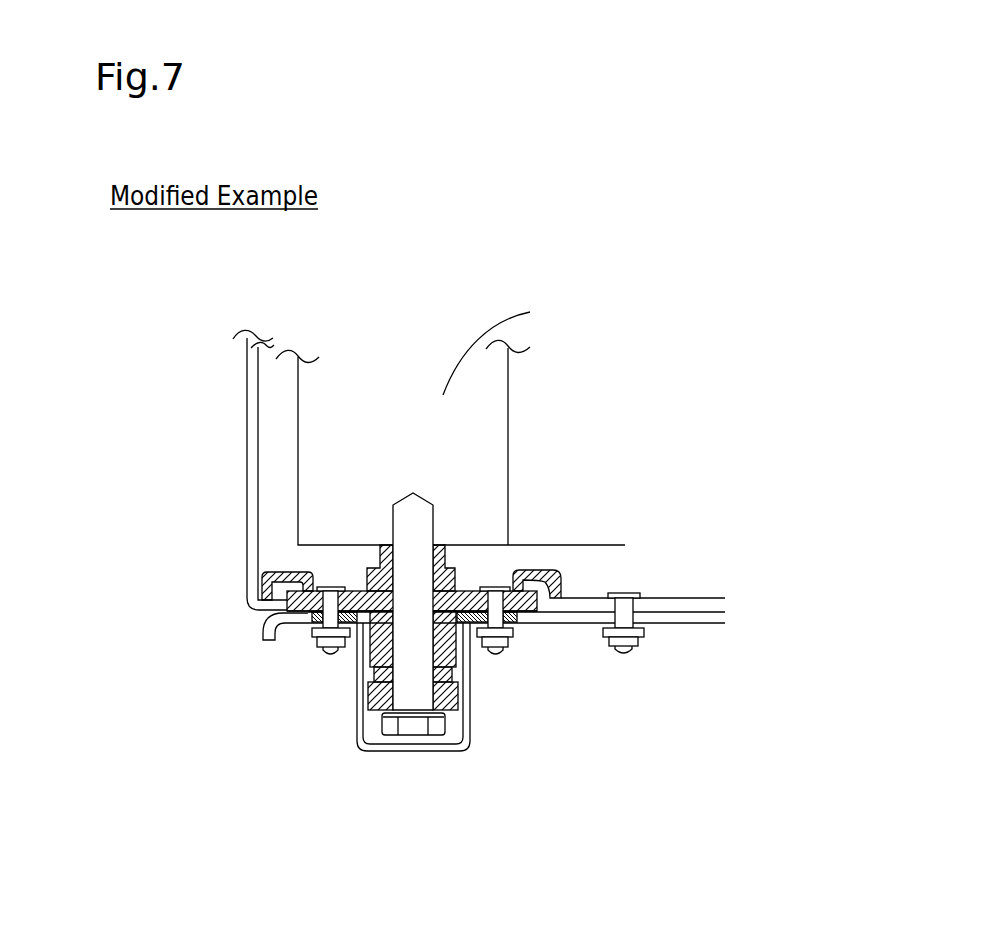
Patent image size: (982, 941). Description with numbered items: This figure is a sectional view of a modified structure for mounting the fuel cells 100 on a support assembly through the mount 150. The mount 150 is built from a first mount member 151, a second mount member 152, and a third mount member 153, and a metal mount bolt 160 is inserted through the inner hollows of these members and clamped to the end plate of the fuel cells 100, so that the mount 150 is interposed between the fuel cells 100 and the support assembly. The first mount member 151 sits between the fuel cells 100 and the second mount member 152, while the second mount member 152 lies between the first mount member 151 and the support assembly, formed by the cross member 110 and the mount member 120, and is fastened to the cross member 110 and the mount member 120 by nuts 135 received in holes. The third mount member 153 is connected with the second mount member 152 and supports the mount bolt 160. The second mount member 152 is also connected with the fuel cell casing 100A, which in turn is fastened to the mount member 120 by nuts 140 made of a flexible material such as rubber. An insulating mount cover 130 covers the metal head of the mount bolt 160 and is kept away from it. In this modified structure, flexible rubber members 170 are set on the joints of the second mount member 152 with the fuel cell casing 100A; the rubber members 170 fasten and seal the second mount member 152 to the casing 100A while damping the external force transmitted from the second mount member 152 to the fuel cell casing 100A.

The fuel cells 100 is at (391, 327).
The fuel cell casing 100A is at (248, 497).
The cross member 110 is at (310, 617).
The mount member 120 is at (713, 627).
The mount cover 130 is at (415, 751).
The nuts 135 is at (331, 655).
The nuts 140 is at (630, 655).
The mount 150 is at (498, 638).
The first mount member 151 is at (457, 574).
The second mount member 152 is at (522, 613).
The third mount member 153 is at (458, 666).
The mount bolt 160 is at (390, 737).
The rubber members 170 is at (262, 578).